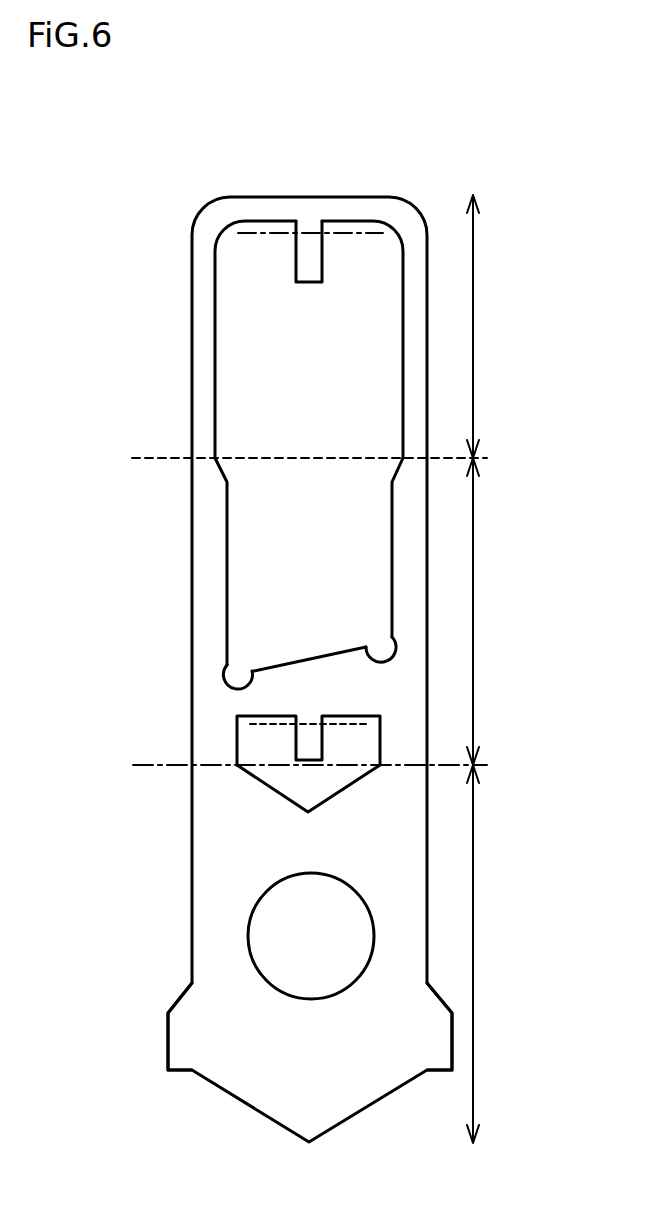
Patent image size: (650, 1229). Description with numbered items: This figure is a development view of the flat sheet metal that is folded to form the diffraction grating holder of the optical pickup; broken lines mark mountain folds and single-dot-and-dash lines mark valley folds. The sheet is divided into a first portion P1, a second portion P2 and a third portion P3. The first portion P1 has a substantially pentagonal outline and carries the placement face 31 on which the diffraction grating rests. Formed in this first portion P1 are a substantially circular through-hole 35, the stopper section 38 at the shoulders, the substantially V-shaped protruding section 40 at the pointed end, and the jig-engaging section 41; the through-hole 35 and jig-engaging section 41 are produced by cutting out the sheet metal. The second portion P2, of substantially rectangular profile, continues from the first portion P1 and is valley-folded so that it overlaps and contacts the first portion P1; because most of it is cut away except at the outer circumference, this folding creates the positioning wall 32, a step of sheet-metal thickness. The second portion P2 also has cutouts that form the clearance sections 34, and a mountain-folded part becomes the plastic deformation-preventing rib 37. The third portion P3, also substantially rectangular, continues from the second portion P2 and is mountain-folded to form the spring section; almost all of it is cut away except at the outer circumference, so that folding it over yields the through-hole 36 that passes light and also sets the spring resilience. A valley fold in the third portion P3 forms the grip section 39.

The placement face 31 is at (338, 1065).
The positioning wall 32 is at (297, 660).
The clearance sections 34 is at (235, 680).
The through-hole 35 is at (275, 933).
The through-hole 36 is at (253, 365).
The plastic deformation-preventing rib 37 is at (303, 745).
The stopper section 38 is at (178, 1042).
The grip section 39 is at (310, 272).
The protruding section 40 is at (266, 1145).
The jig-engaging section 41 is at (308, 792).
The first portion P1 is at (498, 954).
The second portion P2 is at (498, 611).
The third portion P3 is at (498, 326).